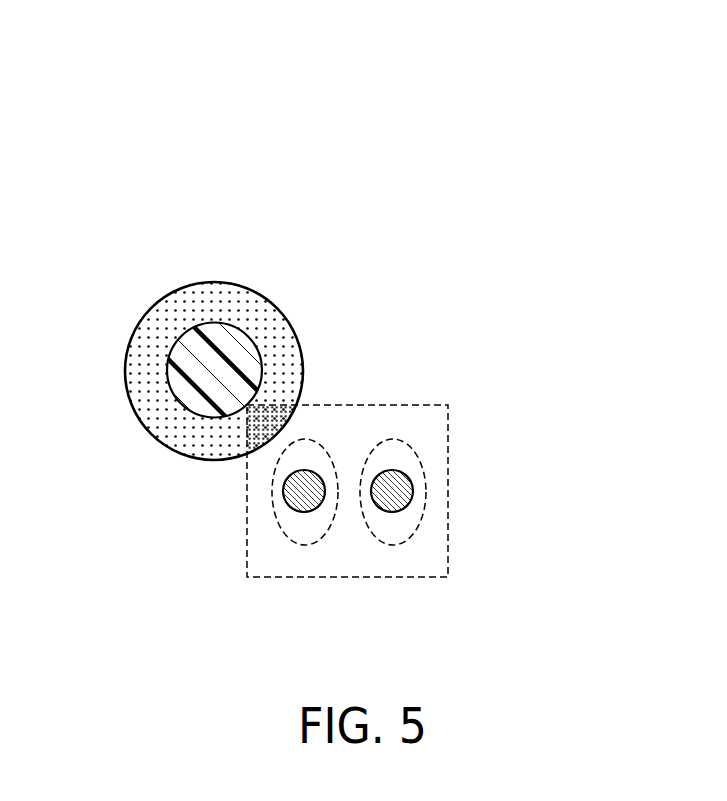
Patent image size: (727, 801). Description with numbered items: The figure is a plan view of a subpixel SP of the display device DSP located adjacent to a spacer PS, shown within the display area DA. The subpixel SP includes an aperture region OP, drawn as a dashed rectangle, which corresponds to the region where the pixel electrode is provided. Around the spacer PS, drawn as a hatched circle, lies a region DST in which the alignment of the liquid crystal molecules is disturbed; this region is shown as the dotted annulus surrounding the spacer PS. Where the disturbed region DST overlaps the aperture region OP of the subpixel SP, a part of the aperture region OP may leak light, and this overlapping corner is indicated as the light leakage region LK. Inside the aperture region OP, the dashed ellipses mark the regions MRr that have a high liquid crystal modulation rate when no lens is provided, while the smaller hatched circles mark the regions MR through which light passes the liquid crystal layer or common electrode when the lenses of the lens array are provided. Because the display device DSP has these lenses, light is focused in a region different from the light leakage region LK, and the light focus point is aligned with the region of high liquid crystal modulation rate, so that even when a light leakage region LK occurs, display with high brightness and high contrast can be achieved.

The display device DSP is at (590, 98).
The display area DA is at (375, 166).
The subpixel SP is at (542, 371).
The region where alignment of liquid crystal molecules is disturbed DST is at (158, 320).
The spacer PS is at (177, 380).
The light leakage region LK is at (252, 417).
The region of light passing through the liquid crystal layer MR is at (285, 495).
The region with high liquid crystal modulation rate MRr is at (300, 545).
The aperture region OP is at (449, 525).